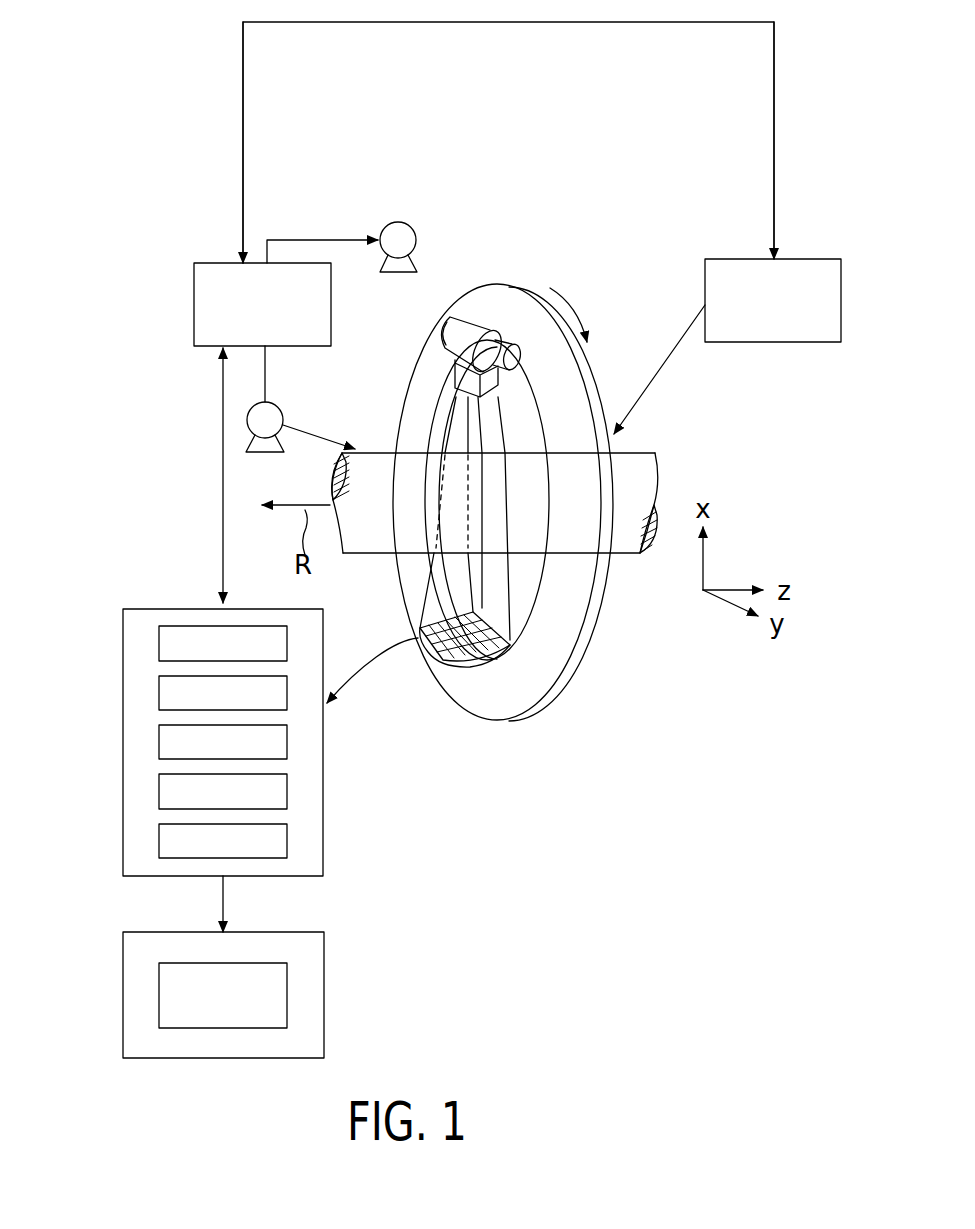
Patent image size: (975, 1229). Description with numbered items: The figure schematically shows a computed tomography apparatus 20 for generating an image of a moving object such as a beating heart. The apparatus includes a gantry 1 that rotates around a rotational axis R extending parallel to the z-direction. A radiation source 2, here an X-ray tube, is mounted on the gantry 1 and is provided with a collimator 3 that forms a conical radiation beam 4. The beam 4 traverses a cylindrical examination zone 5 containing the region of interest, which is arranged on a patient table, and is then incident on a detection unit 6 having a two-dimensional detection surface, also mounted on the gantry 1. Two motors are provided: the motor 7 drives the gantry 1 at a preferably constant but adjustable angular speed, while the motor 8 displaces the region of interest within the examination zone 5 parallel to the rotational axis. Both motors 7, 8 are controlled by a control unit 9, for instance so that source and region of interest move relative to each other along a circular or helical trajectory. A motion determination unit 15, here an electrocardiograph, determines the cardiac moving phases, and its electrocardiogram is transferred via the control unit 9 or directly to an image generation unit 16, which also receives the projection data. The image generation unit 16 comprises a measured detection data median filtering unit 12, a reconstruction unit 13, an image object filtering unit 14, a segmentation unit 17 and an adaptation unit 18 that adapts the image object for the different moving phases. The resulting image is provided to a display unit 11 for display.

The gantry 1 is at (548, 650).
The radiation source 2 is at (468, 325).
The collimator 3 is at (495, 383).
The radiation beam 4 is at (487, 600).
The examination zone 5 is at (372, 453).
The detection unit 6 is at (452, 668).
The motor 7 is at (410, 222).
The motor 8 is at (282, 410).
The control unit 9 is at (212, 263).
The display unit 11 is at (123, 1000).
The measured detection data median filtering unit 12 is at (159, 645).
The reconstruction unit 13 is at (159, 691).
The image object filtering unit 14 is at (159, 743).
The motion determination unit 15 is at (820, 259).
The image generation unit 16 is at (323, 810).
The segmentation unit 17 is at (159, 793).
The adaptation unit 18 is at (159, 841).
The computed tomography apparatus 20 is at (565, 810).